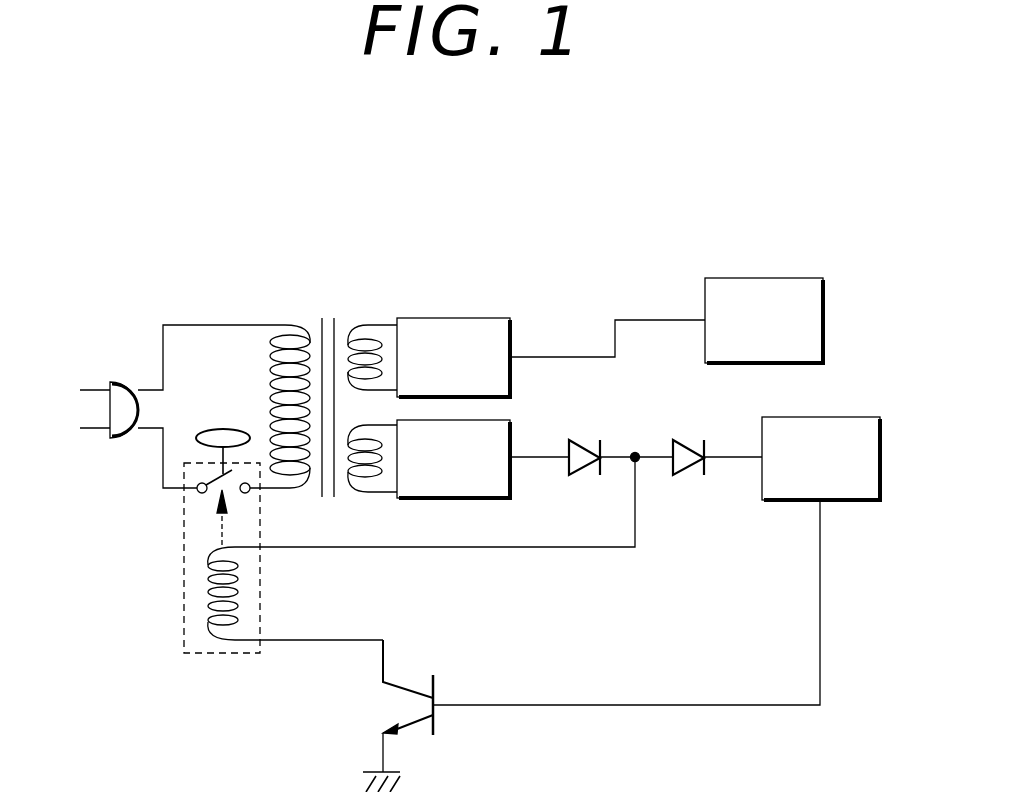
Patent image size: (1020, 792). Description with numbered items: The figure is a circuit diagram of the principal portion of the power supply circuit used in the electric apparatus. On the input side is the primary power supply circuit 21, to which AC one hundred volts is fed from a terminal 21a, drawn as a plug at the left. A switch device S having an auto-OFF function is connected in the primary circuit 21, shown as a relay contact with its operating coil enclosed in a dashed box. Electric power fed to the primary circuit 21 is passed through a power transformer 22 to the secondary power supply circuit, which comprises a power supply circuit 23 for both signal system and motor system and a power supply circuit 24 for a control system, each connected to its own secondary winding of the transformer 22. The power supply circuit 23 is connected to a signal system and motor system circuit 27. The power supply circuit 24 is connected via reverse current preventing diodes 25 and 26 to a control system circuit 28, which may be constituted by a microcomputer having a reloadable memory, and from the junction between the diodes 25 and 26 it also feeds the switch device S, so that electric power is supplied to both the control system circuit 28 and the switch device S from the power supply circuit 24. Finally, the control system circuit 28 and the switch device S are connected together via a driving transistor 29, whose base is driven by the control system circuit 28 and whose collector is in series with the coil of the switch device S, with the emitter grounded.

The primary power supply circuit 21 is at (194, 312).
The terminal 21a is at (118, 372).
The power transformer 22 is at (325, 316).
The power supply circuit for both signal system and motor system 23 is at (447, 318).
The power supply circuit for a control system 24 is at (512, 498).
The reverse current preventing diode 25 is at (588, 443).
The reverse current preventing diode 26 is at (690, 443).
The signal system and motor system circuit 27 is at (753, 278).
The control system circuit 28 is at (848, 417).
The driving transistor 29 is at (393, 708).
The switch device S is at (184, 538).